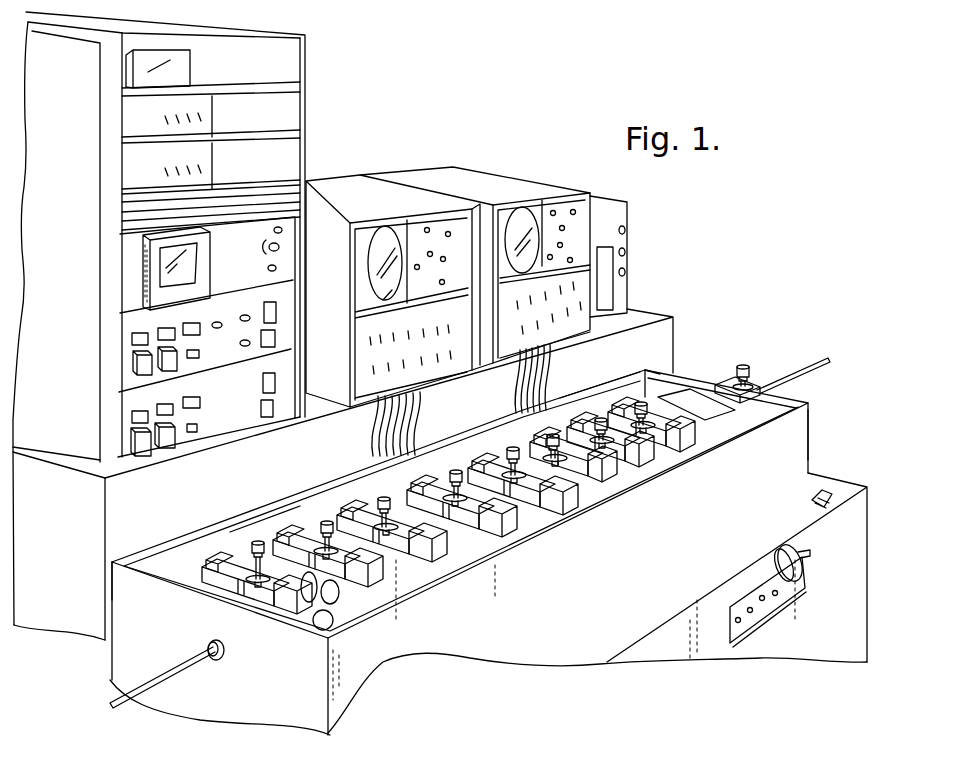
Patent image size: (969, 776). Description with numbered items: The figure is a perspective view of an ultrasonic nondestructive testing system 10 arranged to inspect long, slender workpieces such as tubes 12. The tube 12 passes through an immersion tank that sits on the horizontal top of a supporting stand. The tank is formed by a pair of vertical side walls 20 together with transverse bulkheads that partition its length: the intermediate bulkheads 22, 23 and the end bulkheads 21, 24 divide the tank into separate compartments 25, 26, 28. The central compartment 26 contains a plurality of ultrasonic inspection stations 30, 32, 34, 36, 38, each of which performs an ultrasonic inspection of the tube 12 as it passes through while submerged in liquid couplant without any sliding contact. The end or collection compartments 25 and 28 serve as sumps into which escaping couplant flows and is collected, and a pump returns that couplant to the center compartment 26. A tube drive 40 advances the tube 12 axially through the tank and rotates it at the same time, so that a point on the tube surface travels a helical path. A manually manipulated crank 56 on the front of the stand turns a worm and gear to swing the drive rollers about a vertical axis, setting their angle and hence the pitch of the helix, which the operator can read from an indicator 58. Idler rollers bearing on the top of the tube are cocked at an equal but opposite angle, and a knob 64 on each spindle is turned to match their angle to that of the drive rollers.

The ultrasonic nondestructive testing system 10 is at (491, 156).
The tube 12 is at (800, 367).
The vertical side walls 20 is at (458, 457).
The end bulkhead 21 is at (652, 371).
The intermediate bulkhead 22 is at (604, 392).
The intermediate bulkhead 23 is at (293, 518).
The end bulkhead 24 is at (153, 573).
The collection compartment 25 is at (769, 417).
The central compartment 26 is at (521, 532).
The collection compartment 28 is at (403, 589).
The ultrasonic inspection station 30 is at (672, 461).
The ultrasonic inspection station 32 is at (538, 414).
The ultrasonic inspection station 34 is at (628, 478).
The ultrasonic inspection station 36 is at (593, 497).
The test fixture 38 is at (477, 550).
The tube drive 40 is at (744, 366).
The crank 56 is at (806, 551).
The indicator 58 is at (819, 498).
The knob 64 is at (255, 540).